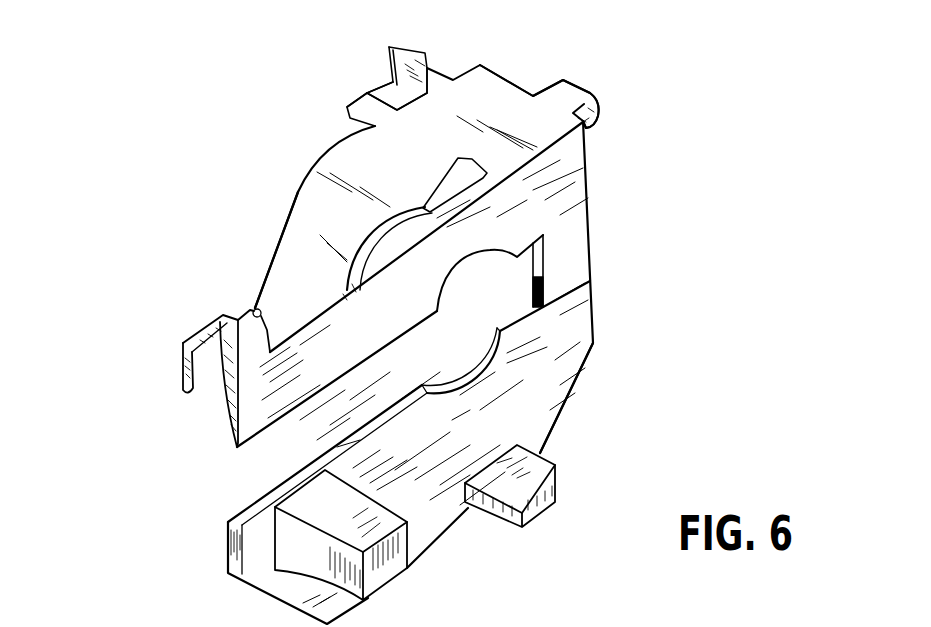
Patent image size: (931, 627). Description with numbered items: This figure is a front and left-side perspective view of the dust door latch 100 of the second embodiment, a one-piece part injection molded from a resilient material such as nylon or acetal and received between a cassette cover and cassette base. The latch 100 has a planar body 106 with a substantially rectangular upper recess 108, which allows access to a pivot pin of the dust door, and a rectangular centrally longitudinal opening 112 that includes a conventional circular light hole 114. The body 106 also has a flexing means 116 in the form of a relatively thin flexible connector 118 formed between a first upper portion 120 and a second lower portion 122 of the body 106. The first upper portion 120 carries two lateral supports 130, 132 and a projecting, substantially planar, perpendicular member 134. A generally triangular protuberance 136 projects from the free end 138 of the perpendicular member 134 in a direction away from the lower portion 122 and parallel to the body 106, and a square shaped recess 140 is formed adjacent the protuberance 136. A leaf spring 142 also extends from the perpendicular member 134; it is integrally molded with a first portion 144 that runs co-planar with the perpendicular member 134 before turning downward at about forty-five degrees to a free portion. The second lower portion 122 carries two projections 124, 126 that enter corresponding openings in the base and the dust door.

The dust door latch 100 is at (95, 546).
The planar body 106 is at (563, 188).
The upper recess 108 is at (410, 324).
The centrally longitudinal opening 112 is at (340, 383).
The light hole 114 is at (490, 253).
The flexing means 116 is at (630, 210).
The flexible connector 118 is at (575, 273).
The first upper portion 120 is at (233, 432).
The second lower portion 122 is at (550, 401).
The projection 124 is at (383, 573).
The projection 126 is at (533, 473).
The lateral support 130 is at (570, 98).
The lateral support 132 is at (188, 365).
The perpendicular member 134 is at (493, 112).
The triangular protuberance 136 is at (410, 70).
The free end 138 is at (365, 107).
The square shaped recess 140 is at (372, 78).
The leaf spring 142 is at (270, 283).
The first portion 144 is at (353, 167).